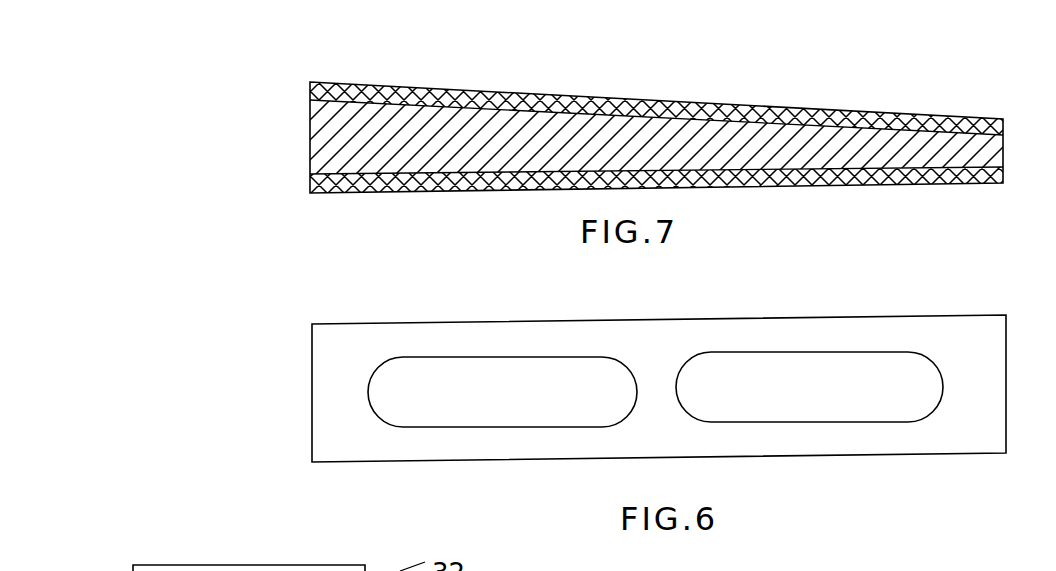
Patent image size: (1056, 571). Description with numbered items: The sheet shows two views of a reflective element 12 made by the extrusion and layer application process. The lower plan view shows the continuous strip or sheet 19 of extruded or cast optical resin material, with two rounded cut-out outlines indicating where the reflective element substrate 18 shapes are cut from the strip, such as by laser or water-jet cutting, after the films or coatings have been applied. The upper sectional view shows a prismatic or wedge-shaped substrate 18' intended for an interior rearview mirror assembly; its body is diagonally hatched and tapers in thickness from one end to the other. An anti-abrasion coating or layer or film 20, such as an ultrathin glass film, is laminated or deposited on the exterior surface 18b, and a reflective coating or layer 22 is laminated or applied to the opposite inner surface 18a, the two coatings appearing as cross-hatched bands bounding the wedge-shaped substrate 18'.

In FIG. 7, the reflective element 12 is at (938, 98).
In FIG. 7, the prismatic or wedge-shaped substrate 18' is at (598, 123).
In FIG. 7, the inner surface 18a is at (440, 176).
In FIG. 7, the exterior surface 18b is at (696, 110).
In FIG. 7, the anti-abrasion coating or layer or film 20 is at (543, 97).
In FIG. 7, the reflective coating or layer 22 is at (812, 177).
In FIG. 6, the continuous strip or sheet 19 is at (337, 404).
In FIG. 6, the reflective element substrate 18 is at (655, 453).